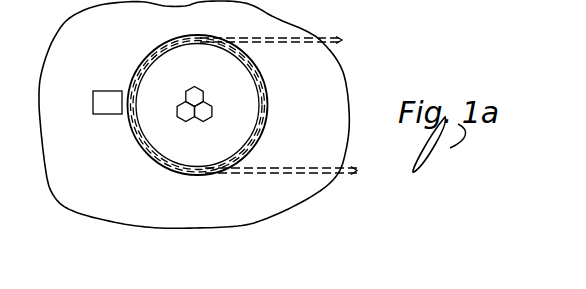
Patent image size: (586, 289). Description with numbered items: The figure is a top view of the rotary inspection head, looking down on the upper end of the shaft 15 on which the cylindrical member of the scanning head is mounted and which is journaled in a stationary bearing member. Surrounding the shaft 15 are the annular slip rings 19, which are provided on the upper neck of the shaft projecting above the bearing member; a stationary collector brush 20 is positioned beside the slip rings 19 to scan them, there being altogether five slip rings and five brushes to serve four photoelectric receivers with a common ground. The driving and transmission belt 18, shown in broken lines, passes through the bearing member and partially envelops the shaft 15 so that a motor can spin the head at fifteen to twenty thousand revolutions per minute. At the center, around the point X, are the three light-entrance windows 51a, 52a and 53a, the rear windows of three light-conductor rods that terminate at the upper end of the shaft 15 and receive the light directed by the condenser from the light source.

The shaft 15 is at (212, 143).
The driving and transmission belt 18 is at (273, 44).
The annular slip rings 19 is at (265, 95).
The stationary collector brushes 20 is at (107, 97).
The light-entrance window 51a is at (193, 87).
The light-entrance window 52a is at (206, 119).
The light-entrance window 53a is at (182, 109).
The center point X is at (198, 103).